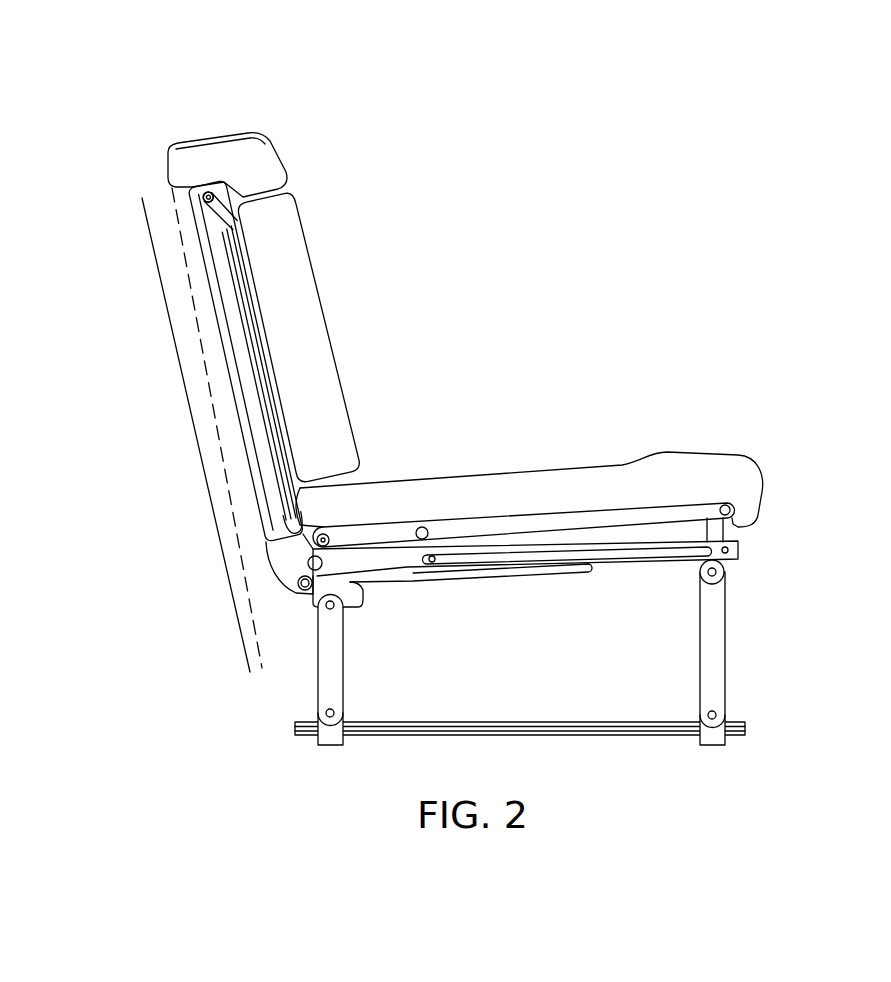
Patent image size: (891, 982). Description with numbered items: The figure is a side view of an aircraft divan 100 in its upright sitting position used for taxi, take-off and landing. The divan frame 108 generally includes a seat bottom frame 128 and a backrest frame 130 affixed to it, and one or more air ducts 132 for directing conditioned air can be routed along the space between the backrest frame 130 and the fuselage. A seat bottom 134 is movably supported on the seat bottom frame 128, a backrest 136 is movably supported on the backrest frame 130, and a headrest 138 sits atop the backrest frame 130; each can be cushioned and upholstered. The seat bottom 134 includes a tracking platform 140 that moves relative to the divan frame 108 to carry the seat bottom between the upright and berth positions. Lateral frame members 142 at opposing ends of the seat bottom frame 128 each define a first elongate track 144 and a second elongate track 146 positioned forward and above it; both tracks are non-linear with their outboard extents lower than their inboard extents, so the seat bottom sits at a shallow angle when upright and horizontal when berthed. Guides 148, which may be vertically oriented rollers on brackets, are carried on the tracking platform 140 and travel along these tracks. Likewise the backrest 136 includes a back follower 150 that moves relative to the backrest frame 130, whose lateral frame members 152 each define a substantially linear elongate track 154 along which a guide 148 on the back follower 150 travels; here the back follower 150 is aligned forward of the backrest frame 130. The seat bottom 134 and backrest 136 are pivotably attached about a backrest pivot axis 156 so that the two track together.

The divan 100 is at (271, 98).
The divan frame 108 is at (290, 572).
The seat bottom frame 128 is at (608, 568).
The backrest frame 130 is at (226, 323).
The air duct 132 is at (188, 299).
The seat bottom 134 is at (593, 463).
The backrest 136 is at (299, 336).
The headrest 138 is at (276, 134).
The tracking platform 140 is at (700, 513).
The lateral frame member 142 is at (742, 551).
The first elongate track 144 is at (378, 578).
The second elongate track 146 is at (540, 553).
The guide 148 is at (200, 195).
The back follower 150 is at (245, 361).
The lateral frame member 152 is at (261, 372).
The elongate track 154 is at (254, 376).
The backrest pivot axis 156 is at (294, 523).